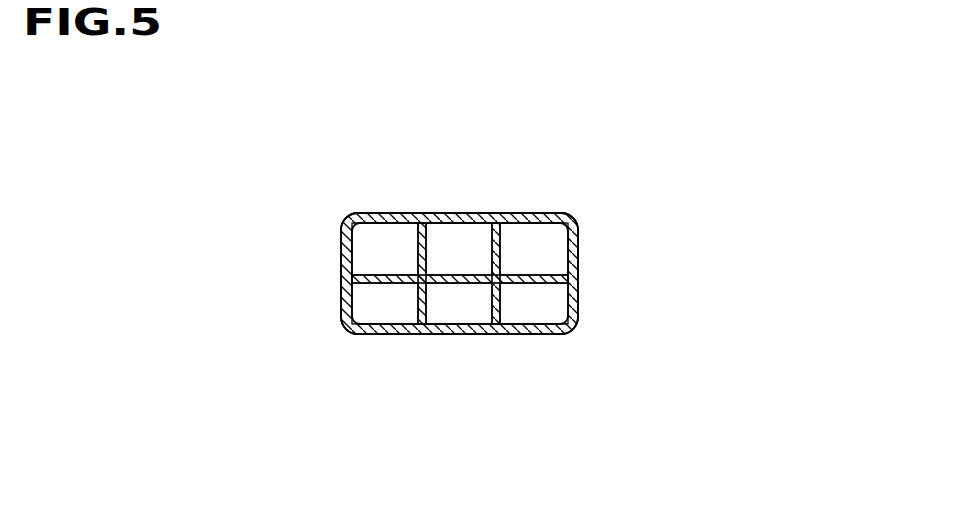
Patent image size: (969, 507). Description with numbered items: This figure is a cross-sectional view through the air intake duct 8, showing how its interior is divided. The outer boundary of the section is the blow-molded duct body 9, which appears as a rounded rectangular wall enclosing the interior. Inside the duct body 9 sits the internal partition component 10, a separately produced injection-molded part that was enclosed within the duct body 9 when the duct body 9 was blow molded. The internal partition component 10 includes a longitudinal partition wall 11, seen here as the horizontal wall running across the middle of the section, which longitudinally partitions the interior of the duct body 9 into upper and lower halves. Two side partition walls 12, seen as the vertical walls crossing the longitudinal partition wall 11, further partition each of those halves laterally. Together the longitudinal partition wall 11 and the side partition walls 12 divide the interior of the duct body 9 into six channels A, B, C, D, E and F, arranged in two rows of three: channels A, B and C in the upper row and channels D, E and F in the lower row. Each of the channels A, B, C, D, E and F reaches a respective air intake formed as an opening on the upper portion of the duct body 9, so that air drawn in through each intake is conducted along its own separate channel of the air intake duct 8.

The air intake duct 8 is at (596, 195).
The duct body 9 is at (578, 246).
The internal partition component 10 is at (543, 288).
The longitudinal partition wall 11 is at (462, 274).
The side partition walls 12 is at (417, 311).
The channel A is at (377, 243).
The channel B is at (458, 250).
The channel C is at (535, 243).
The channel D is at (375, 297).
The channel E is at (462, 303).
The channel F is at (542, 305).